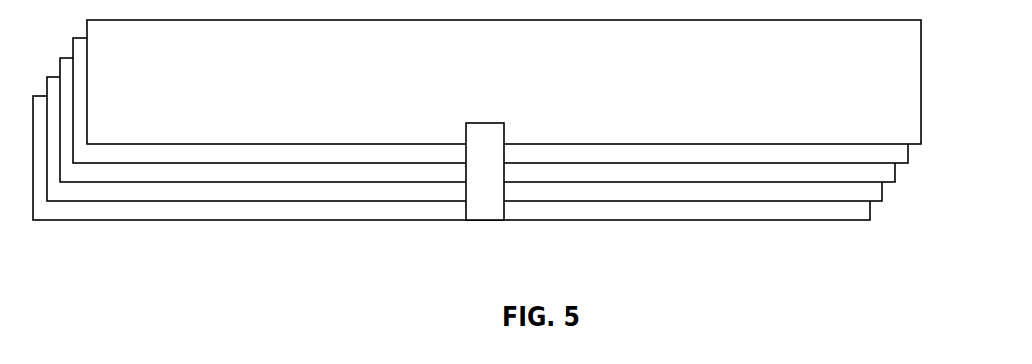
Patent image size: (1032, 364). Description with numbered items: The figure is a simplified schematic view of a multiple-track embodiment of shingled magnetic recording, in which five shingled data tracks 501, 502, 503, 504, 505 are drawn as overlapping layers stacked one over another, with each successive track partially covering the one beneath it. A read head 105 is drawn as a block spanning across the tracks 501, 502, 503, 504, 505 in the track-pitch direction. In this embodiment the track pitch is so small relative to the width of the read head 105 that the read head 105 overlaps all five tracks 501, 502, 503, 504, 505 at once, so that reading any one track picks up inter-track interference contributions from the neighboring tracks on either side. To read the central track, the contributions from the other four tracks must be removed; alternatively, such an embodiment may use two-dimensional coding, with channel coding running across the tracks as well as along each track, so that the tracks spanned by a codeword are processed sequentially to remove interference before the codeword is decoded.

The read head 105 is at (504, 173).
The track 501 is at (870, 204).
The track 502 is at (882, 192).
The track 503 is at (895, 175).
The track 504 is at (908, 157).
The track 505 is at (921, 82).